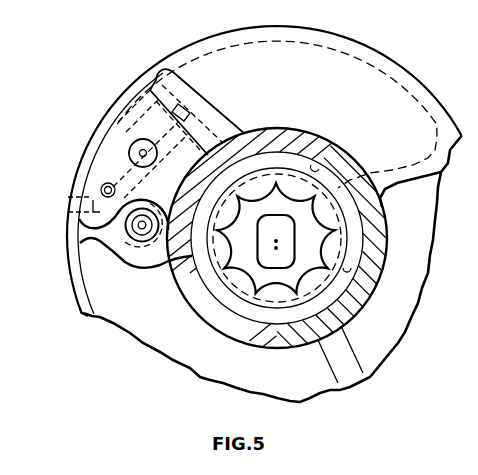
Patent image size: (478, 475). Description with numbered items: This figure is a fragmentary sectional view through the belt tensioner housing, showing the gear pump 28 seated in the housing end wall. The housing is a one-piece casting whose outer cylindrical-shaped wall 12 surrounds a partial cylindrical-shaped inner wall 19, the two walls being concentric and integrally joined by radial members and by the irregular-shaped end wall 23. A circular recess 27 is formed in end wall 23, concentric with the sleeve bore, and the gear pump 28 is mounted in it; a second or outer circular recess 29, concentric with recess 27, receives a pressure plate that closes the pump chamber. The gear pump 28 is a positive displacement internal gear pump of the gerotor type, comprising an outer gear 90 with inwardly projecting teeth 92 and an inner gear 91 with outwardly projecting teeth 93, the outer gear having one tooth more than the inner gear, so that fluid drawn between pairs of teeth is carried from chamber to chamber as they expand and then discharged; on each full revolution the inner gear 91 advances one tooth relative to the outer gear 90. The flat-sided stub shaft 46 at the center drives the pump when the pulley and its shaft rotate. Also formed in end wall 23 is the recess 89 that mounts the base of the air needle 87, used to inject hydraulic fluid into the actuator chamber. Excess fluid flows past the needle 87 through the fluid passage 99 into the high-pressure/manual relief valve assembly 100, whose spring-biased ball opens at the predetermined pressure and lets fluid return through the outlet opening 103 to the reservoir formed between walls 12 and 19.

The outer cylindrical-shaped wall 12 is at (336, 50).
The partial cylindrical-shaped inner wall 19 is at (373, 307).
The irregular-shaped end wall 23 is at (357, 83).
The circular recess 27 is at (350, 265).
The second or outer circular recess 29 is at (315, 167).
The flat-sided stub shaft 46 is at (287, 231).
The air needle 87 is at (133, 148).
The recess 89 is at (132, 155).
The outer gear 90 is at (293, 315).
The inner gear 91 is at (285, 265).
The inwardly projecting teeth 92 is at (250, 244).
The outwardly projecting teeth 93 is at (227, 291).
The fluid passage 99 is at (100, 190).
The high-pressure/manual relief valve assembly 100 is at (124, 239).
The outlet opening 103 is at (142, 228).
The gear pump 28 is at (272, 256).